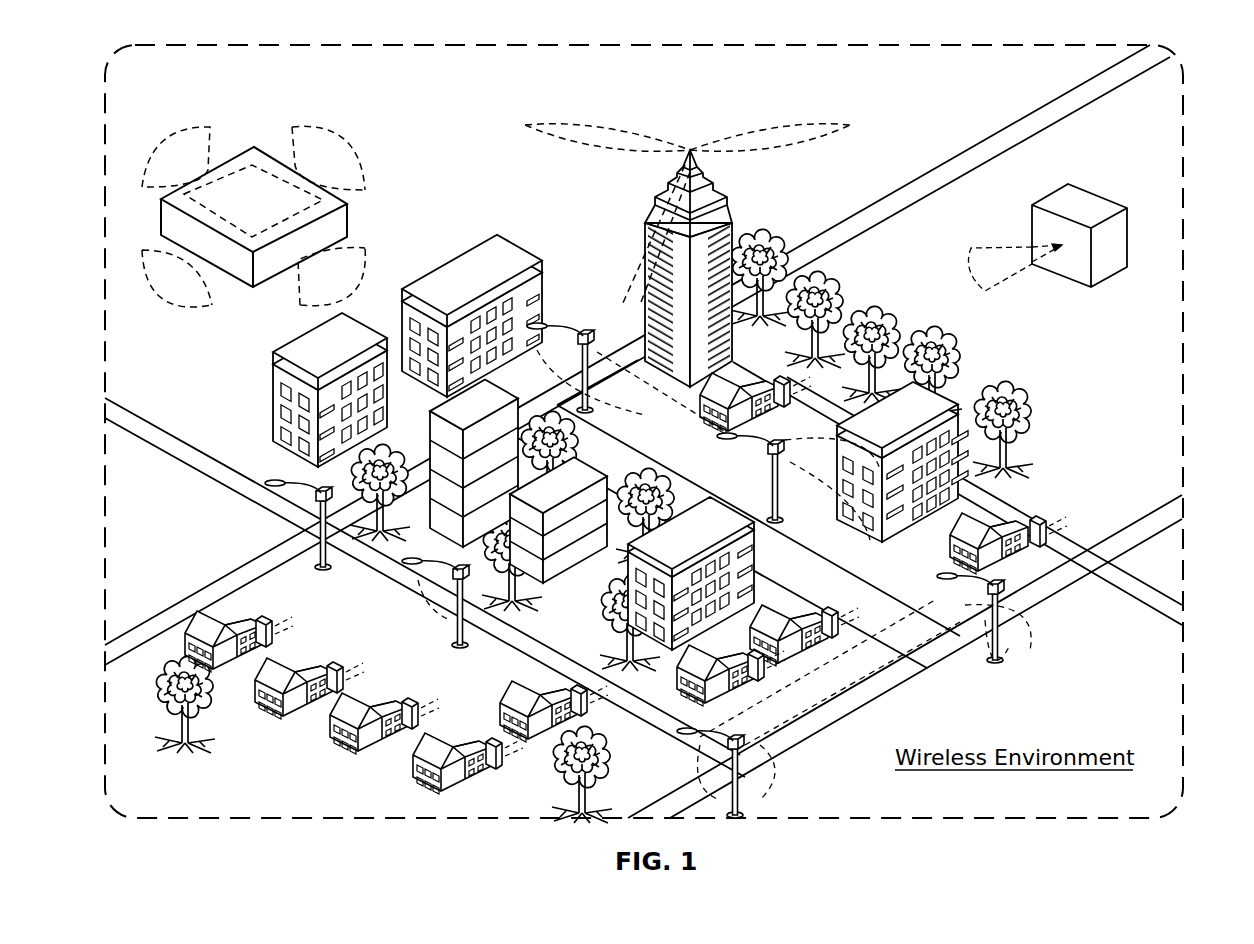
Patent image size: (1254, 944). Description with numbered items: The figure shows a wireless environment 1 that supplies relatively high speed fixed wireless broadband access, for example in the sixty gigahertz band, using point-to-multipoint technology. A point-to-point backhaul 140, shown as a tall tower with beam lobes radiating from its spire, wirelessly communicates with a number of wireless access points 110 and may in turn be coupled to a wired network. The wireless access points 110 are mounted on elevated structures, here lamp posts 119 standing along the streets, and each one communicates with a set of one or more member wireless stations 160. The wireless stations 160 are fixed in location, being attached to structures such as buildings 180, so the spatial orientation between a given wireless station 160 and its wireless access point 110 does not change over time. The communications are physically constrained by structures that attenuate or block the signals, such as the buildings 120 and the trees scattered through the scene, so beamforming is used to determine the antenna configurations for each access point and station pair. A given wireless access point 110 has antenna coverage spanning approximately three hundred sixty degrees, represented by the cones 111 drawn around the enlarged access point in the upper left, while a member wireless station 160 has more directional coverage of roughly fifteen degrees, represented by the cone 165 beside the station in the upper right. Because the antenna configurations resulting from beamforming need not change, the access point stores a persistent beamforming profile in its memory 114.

The wireless environment 1 is at (1210, 65).
The wireless access point 110 is at (347, 203).
The cones 111 is at (180, 130).
The memory 114 is at (247, 162).
The lamp posts 119 is at (593, 405).
The buildings 120 is at (437, 270).
The point-to-point backhaul 140 is at (690, 148).
The member wireless stations 160 is at (1120, 268).
The cone 165 is at (1000, 247).
The buildings 180 is at (243, 677).